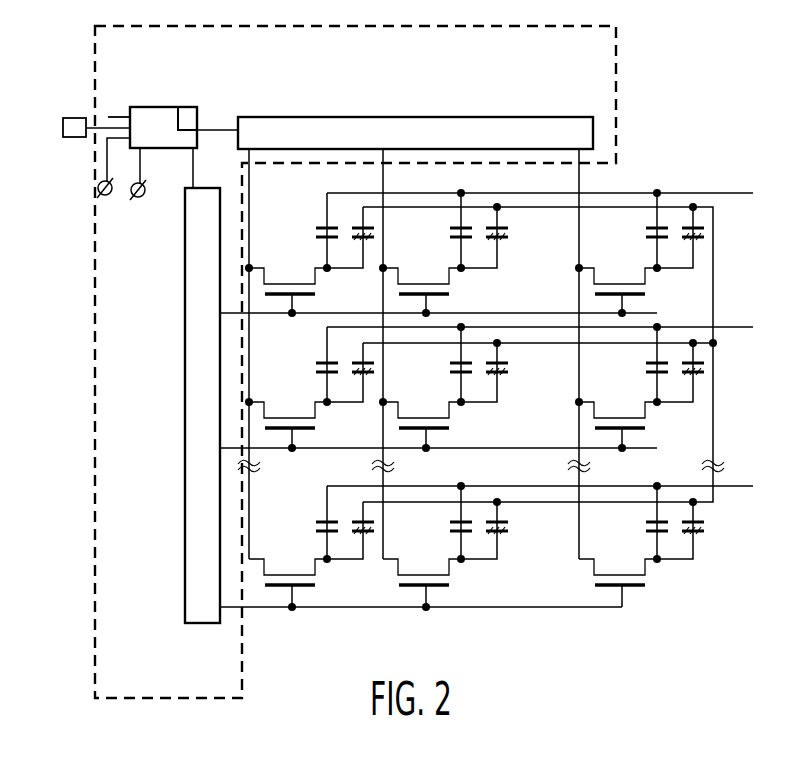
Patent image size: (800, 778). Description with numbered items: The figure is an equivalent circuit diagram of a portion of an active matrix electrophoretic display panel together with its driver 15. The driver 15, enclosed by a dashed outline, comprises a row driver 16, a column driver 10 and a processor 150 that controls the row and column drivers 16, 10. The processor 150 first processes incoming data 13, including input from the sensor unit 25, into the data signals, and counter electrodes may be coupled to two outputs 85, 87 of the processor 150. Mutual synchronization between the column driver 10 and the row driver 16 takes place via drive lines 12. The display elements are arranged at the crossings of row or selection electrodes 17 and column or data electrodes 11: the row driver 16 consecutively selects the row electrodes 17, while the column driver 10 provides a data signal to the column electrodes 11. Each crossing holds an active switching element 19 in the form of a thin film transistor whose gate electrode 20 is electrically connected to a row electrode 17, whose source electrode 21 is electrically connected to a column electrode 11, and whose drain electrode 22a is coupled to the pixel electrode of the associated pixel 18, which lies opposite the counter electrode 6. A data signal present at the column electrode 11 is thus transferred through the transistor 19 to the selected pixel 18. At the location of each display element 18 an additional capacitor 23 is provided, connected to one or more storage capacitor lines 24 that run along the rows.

The processor 150 is at (150, 107).
The sensor unit 25 is at (76, 118).
The incoming data 13 is at (118, 117).
The drive lines 12 is at (218, 130).
The output 85 is at (105, 196).
The output 87 is at (138, 197).
The column driver 10 is at (503, 117).
The driver 15 is at (617, 73).
The row driver 16 is at (185, 418).
The column electrodes 11 is at (249, 178).
The storage capacitor lines 24 is at (723, 193).
The counter electrode 6 is at (713, 262).
The row electrodes 17 is at (228, 313).
The additional capacitor 23 is at (316, 232).
The pixel 18 is at (355, 233).
The active switching element 19 is at (316, 289).
The gate electrode 20 is at (296, 318).
The source electrode 21 is at (252, 266).
The drain electrode 22a is at (314, 268).